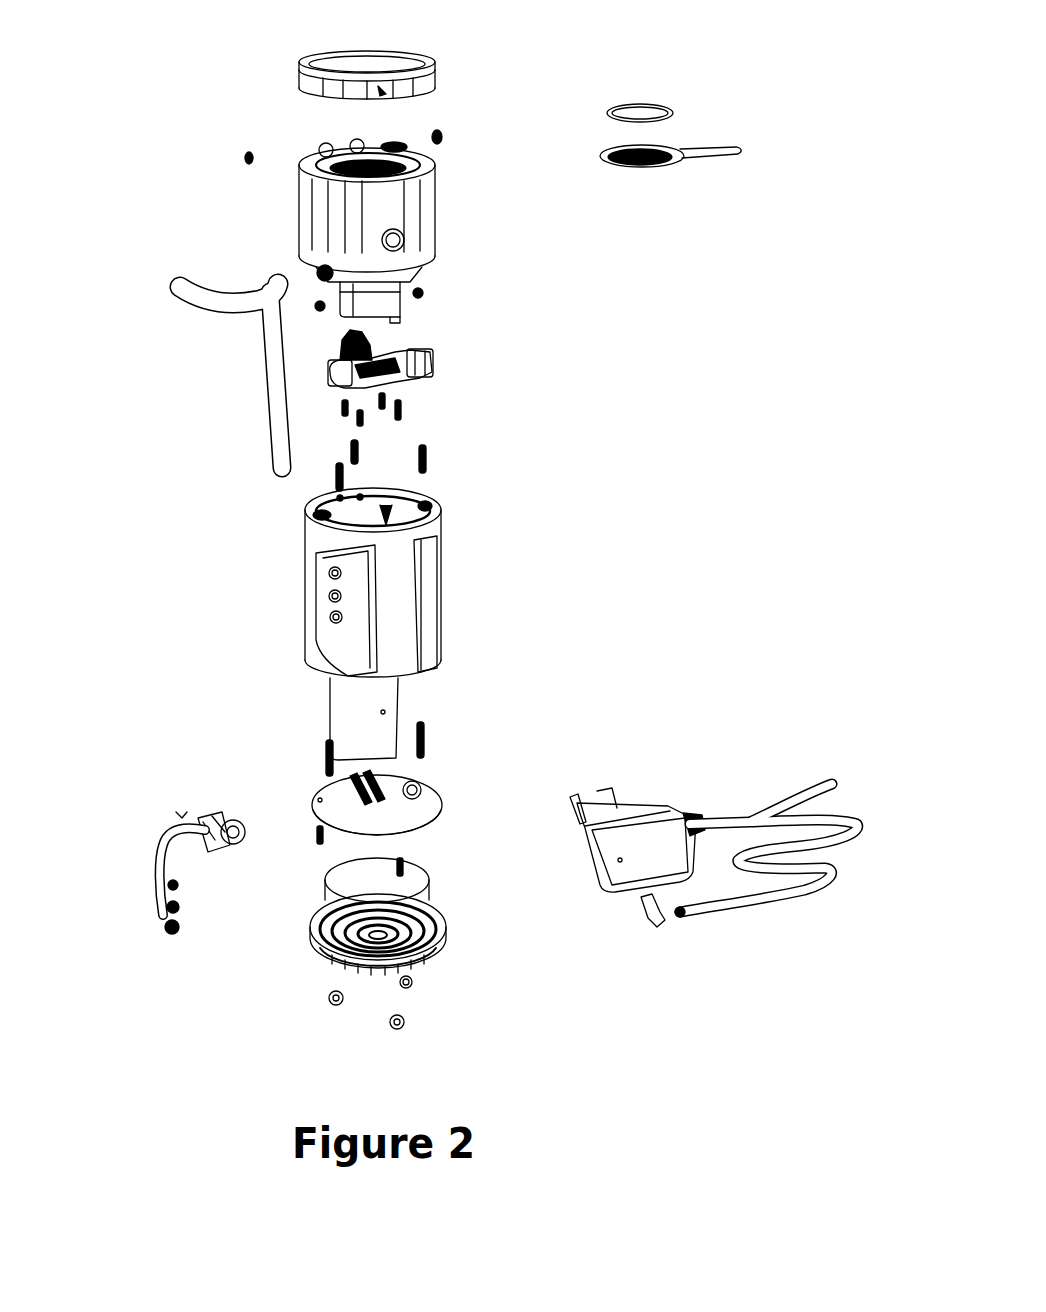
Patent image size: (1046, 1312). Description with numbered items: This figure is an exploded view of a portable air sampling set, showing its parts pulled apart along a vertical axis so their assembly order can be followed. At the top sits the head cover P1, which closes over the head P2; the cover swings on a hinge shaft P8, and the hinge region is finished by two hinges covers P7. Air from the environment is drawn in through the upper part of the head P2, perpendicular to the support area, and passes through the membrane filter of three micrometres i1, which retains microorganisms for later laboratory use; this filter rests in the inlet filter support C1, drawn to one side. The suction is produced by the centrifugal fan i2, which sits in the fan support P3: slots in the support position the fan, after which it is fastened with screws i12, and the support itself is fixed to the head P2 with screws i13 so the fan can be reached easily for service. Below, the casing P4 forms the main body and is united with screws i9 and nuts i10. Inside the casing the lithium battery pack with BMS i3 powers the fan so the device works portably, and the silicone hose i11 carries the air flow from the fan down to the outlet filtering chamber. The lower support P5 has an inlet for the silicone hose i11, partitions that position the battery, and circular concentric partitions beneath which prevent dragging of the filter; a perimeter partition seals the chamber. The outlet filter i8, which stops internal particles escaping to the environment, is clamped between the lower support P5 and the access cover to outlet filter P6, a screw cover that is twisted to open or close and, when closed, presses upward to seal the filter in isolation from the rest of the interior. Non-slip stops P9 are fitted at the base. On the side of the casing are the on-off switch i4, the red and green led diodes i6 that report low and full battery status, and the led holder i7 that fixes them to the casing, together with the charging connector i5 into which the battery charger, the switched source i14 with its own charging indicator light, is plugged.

The head cover P1 is at (300, 65).
The hinge shaft P8 is at (398, 138).
The hinges covers P7 is at (443, 133).
The head P2 is at (437, 205).
The centrifugal fan i2 is at (412, 272).
The nuts i10 is at (420, 292).
The fan support P3 is at (405, 357).
The screws i12 is at (402, 412).
The screws i13 is at (426, 452).
The casing P4 is at (441, 556).
The lithium battery pack with BMS i3 is at (405, 670).
The screws i9 is at (426, 720).
The lower support P5 is at (440, 797).
The outlet filter i8 is at (418, 888).
The access cover to outlet filter P6 is at (440, 921).
The non-slip stop P9 is at (400, 1020).
The membrane filter of 3 μm i1 is at (680, 105).
The inlet filter support C1 is at (703, 148).
The silicone hose i11 is at (183, 280).
The switched source i14 is at (672, 812).
The on-off switch i4 is at (215, 815).
The led diodes i6 is at (158, 880).
The led holder i7 is at (162, 900).
The charging connector i5 is at (165, 926).